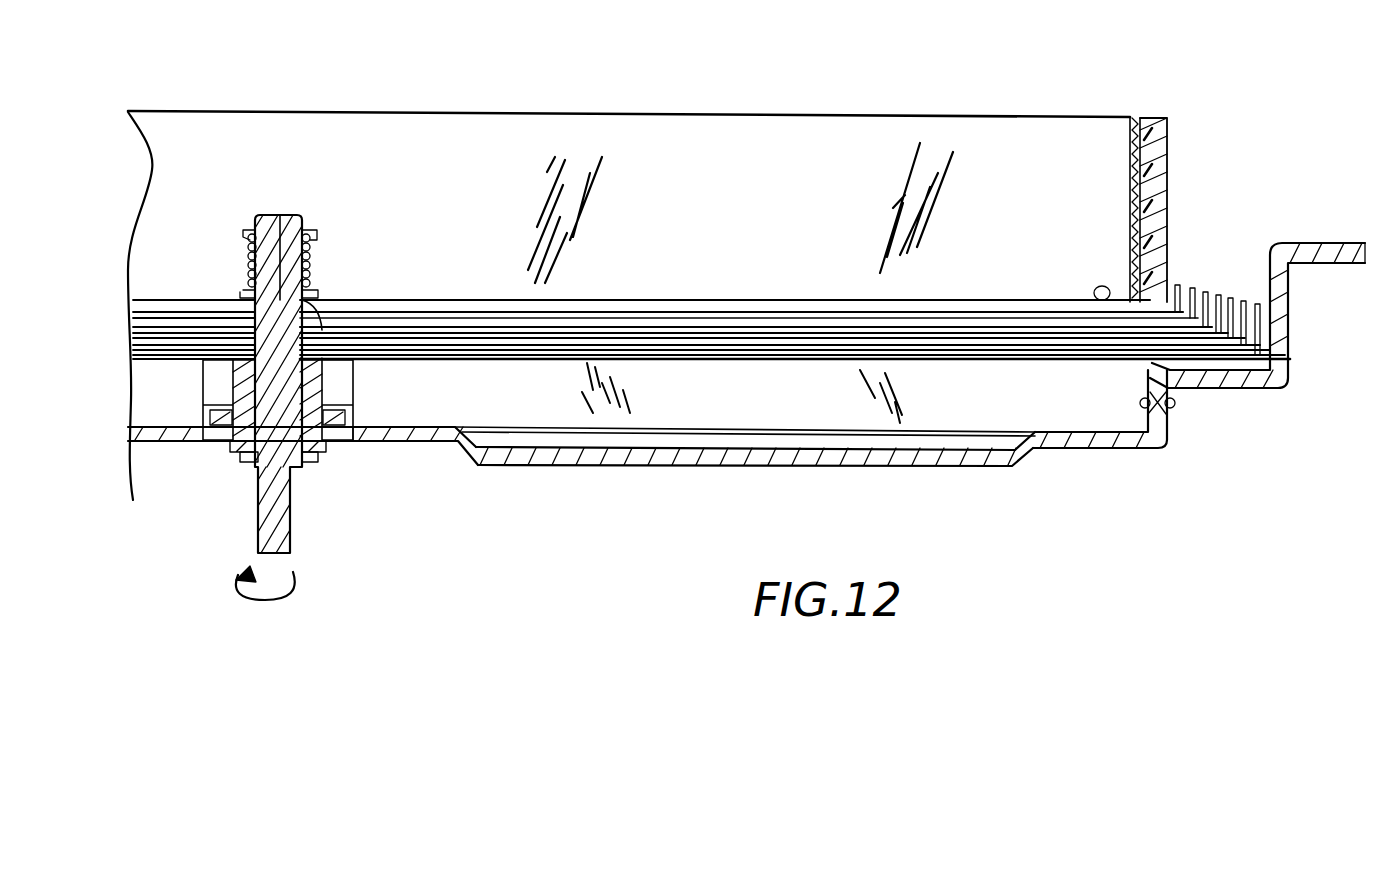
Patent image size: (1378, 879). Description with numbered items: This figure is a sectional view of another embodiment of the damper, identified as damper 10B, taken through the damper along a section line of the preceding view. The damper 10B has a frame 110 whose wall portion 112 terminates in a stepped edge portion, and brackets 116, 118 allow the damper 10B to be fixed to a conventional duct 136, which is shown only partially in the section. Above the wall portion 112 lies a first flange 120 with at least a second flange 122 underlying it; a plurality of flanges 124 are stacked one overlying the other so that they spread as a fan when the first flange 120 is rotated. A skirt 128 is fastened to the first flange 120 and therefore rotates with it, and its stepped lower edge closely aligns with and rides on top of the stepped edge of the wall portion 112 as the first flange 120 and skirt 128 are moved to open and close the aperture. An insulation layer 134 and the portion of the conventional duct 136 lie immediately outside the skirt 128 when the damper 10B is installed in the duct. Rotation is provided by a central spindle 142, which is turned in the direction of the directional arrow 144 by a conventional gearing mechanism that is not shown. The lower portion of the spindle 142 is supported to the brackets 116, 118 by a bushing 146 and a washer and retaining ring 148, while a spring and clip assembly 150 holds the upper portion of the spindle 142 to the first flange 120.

The damper 10B is at (1127, 477).
The frame 110 is at (1057, 418).
The wall portion 112 is at (438, 402).
The bracket 116 is at (335, 442).
The bracket 118 is at (582, 452).
The first flange 120 is at (958, 305).
The second flange 122 is at (1160, 305).
The flanges 124 is at (1232, 263).
The skirt 128 is at (360, 148).
The insulation layer 134 is at (1142, 128).
The conventional duct 136 is at (1162, 150).
The central spindle 142 is at (285, 537).
The directional arrow 144 is at (265, 600).
The bushing 146 is at (232, 443).
The washer and retaining ring 148 is at (243, 463).
The spring and clip assembly 150 is at (228, 258).